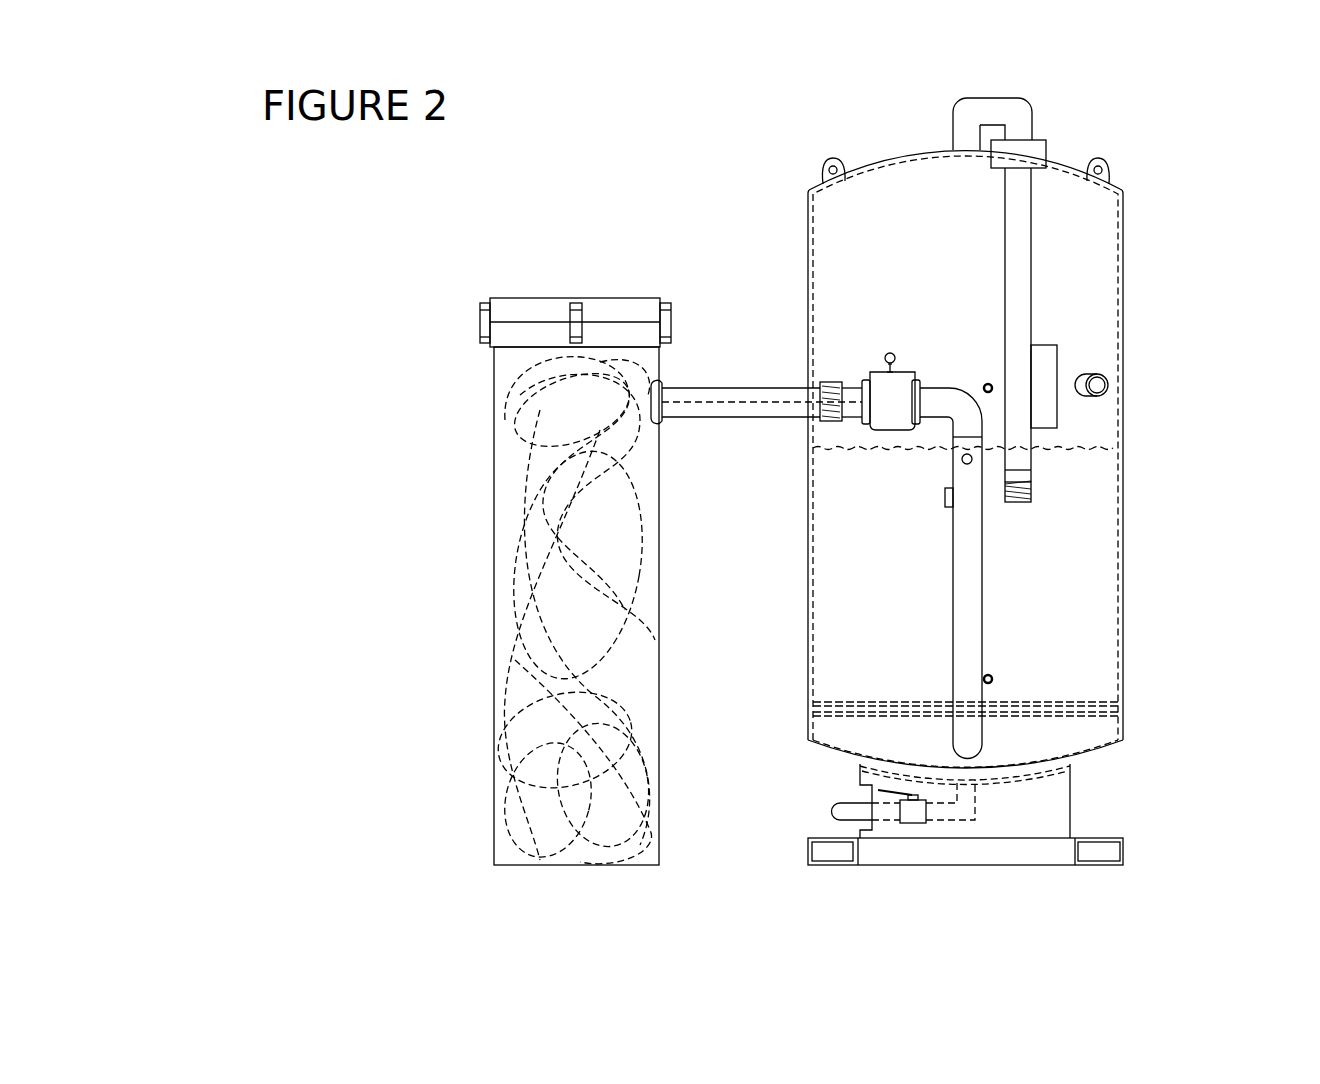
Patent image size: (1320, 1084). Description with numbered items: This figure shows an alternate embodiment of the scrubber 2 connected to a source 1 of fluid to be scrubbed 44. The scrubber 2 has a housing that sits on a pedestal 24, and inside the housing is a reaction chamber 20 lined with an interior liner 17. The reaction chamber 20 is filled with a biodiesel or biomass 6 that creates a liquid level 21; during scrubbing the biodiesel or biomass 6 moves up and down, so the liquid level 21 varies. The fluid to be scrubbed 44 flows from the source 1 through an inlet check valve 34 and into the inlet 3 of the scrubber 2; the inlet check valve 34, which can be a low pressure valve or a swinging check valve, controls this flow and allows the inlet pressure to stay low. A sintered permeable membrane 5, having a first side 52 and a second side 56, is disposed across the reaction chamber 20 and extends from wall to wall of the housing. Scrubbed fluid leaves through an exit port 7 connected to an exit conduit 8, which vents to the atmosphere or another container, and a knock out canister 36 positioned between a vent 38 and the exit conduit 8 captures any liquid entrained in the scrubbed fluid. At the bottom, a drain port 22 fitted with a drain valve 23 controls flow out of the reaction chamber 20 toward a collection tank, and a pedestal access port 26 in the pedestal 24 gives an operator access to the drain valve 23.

The source 1 is at (497, 603).
The scrubber 2 is at (1236, 136).
The inlet 3 is at (985, 760).
The sintered permeable membrane 5 is at (1072, 710).
The biodiesel or biomass 6 is at (1048, 542).
The exit port 7 is at (963, 147).
The exit conduit 8 is at (987, 107).
The interior liner 17 is at (888, 162).
The reaction chamber 20 is at (928, 285).
The liquid level 21 is at (898, 450).
The drain port 22 is at (967, 795).
The drain valve 23 is at (913, 815).
The pedestal 24 is at (1072, 800).
The pedestal access port 26 is at (866, 803).
The inlet check valve 34 is at (887, 387).
The knock out canister 36 is at (1022, 153).
The vent 38 is at (1048, 372).
The fluid to be scrubbed 44 is at (755, 403).
The first side 52 is at (1072, 715).
The second side 56 is at (1072, 704).